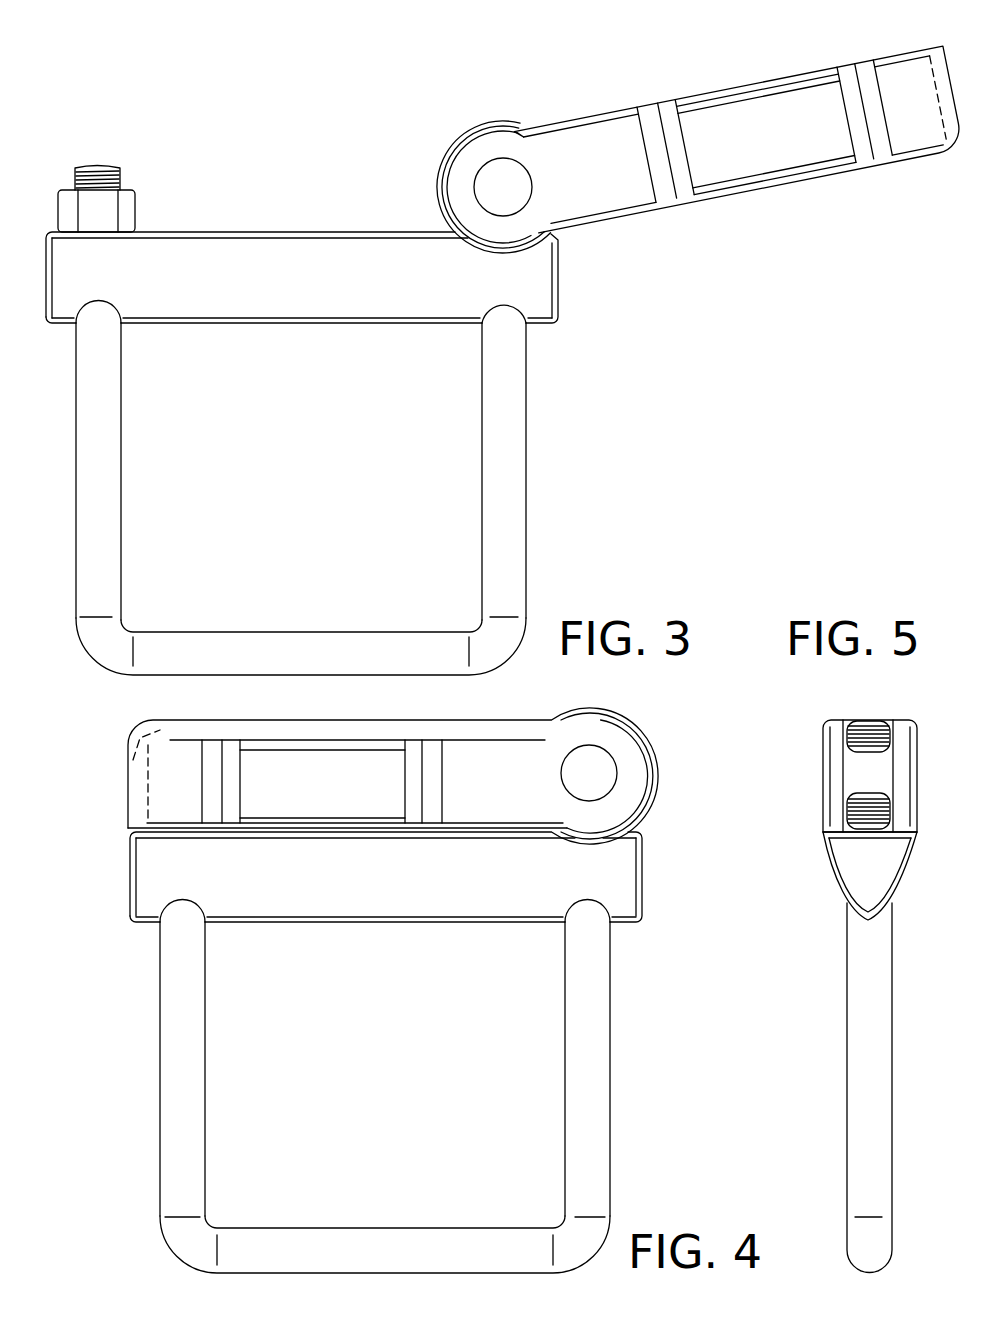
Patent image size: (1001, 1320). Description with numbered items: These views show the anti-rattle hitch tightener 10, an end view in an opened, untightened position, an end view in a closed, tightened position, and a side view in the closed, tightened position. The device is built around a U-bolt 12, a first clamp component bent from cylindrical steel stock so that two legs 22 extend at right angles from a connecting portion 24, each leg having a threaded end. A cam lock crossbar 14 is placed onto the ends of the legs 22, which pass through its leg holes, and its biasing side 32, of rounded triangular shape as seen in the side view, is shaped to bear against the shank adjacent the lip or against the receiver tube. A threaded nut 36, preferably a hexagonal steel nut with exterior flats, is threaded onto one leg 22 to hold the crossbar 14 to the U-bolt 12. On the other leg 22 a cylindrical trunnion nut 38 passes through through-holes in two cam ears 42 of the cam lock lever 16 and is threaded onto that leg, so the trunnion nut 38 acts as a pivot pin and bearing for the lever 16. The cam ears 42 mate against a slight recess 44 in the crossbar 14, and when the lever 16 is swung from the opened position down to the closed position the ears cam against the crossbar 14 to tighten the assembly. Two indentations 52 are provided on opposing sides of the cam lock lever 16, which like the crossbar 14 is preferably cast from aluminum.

In FIG. 3, the anti-rattle hitch tightener 10 is at (177, 104).
In FIG. 4, the anti-rattle hitch tightener 10 is at (126, 710).
In FIG. 3, the U-bolt 12 is at (522, 538).
In FIG. 4, the U-bolt 12 is at (600, 1118).
In FIG. 5, the U-bolt 12 is at (860, 1022).
In FIG. 3, the cam lock crossbar 14 is at (379, 322).
In FIG. 4, the cam lock crossbar 14 is at (315, 879).
In FIG. 5, the cam lock crossbar 14 is at (855, 872).
In FIG. 3, the cam lock lever 16 is at (751, 195).
In FIG. 4, the cam lock lever 16 is at (492, 750).
In FIG. 5, the cam lock lever 16 is at (829, 722).
In FIG. 3, the legs 22 is at (100, 473).
In FIG. 4, the legs 22 is at (583, 1018).
In FIG. 5, the legs 22 is at (858, 1072).
In FIG. 3, the connecting portion 24 is at (252, 655).
In FIG. 4, the connecting portion 24 is at (325, 1245).
In FIG. 3, the biasing side 32 is at (278, 310).
In FIG. 4, the biasing side 32 is at (420, 893).
In FIG. 3, the threaded nut 36 is at (140, 200).
In FIG. 3, the trunnion nut 38 is at (482, 180).
In FIG. 4, the trunnion nut 38 is at (597, 760).
In FIG. 5, the trunnion nut 38 is at (845, 761).
In FIG. 3, the cam ears 42 is at (473, 147).
In FIG. 4, the cam ears 42 is at (630, 808).
In FIG. 5, the cam ears 42 is at (835, 805).
In FIG. 3, the recess 44 is at (452, 228).
In FIG. 4, the recess 44 is at (622, 842).
In FIG. 3, the indentations 52 is at (790, 135).
In FIG. 4, the indentations 52 is at (348, 765).